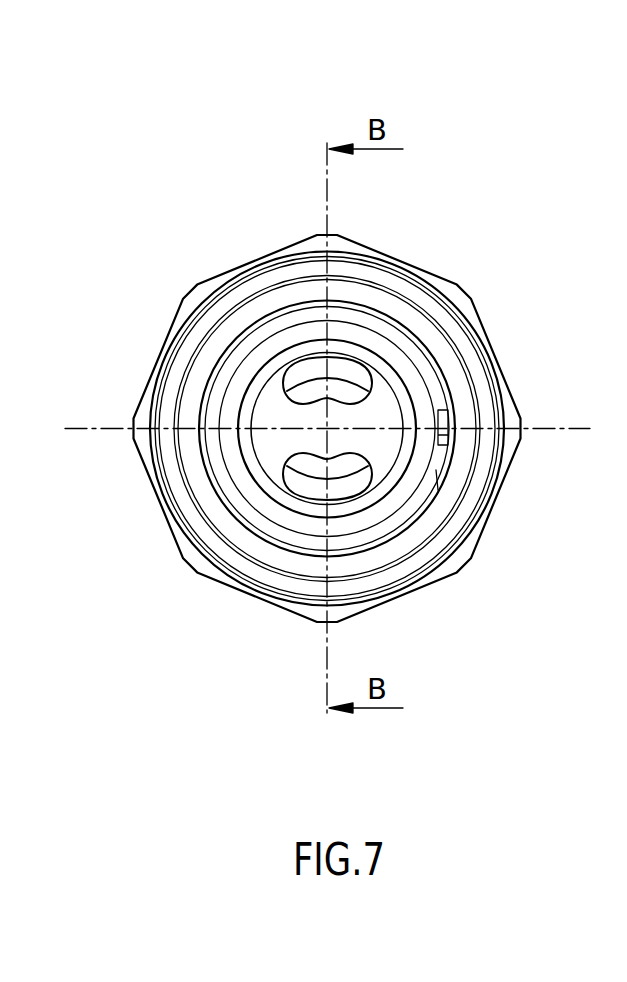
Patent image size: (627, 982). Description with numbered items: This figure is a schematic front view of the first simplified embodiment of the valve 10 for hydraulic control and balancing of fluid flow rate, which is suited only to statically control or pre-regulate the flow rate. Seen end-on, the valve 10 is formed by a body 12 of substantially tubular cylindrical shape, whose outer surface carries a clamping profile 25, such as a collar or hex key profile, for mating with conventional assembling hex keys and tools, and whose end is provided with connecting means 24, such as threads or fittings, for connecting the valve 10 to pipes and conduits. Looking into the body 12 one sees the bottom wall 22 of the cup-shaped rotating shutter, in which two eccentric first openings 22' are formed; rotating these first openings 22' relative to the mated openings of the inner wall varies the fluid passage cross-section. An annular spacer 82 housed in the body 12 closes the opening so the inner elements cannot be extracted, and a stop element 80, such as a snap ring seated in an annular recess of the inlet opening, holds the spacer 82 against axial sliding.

The valve 10 is at (465, 193).
The body 12 is at (485, 322).
The connecting means 24 is at (197, 307).
The clamping profile 25 is at (257, 598).
The stop element 80 is at (412, 510).
The spacer 82 is at (422, 410).
The bottom wall 22 is at (256, 462).
The first opening 22' is at (382, 350).